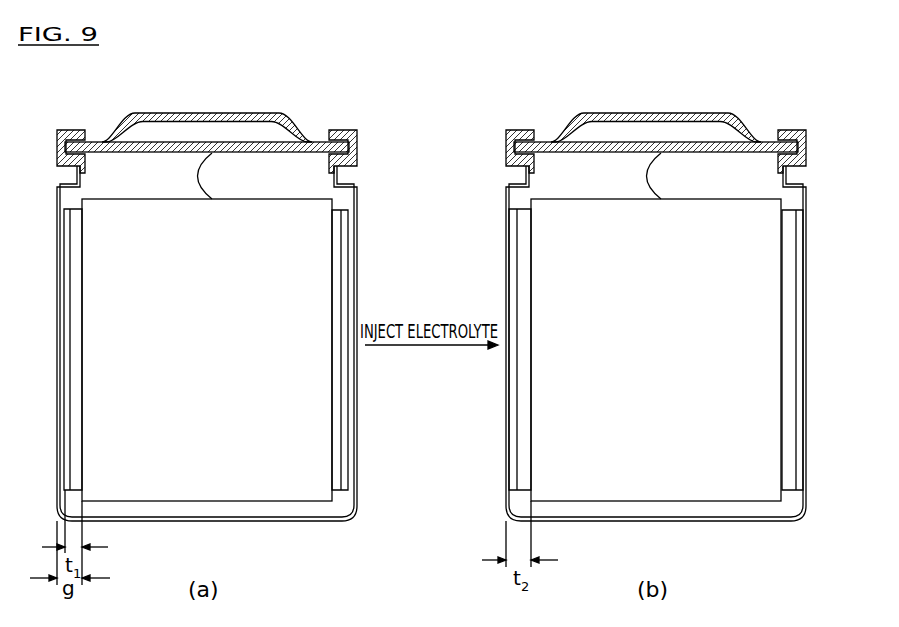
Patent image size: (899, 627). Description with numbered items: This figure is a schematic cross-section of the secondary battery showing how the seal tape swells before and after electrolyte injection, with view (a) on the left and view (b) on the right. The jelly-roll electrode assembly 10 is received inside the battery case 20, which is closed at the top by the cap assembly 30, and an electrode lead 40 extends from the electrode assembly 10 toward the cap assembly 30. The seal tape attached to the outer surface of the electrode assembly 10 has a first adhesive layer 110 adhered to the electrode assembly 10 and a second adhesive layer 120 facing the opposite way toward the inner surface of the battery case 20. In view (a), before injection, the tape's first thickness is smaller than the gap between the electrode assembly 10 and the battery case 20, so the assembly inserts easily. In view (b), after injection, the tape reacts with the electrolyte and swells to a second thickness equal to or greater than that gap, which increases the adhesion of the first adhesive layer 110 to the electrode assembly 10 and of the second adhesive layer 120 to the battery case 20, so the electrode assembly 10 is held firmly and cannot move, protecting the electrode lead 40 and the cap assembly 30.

The electrode assembly 10 is at (317, 228).
The battery case 20 is at (357, 157).
The cap assembly 30 is at (281, 113).
The electrode lead 40 is at (198, 178).
The first adhesive layer 110 is at (338, 274).
The second adhesive layer 120 is at (344, 245).